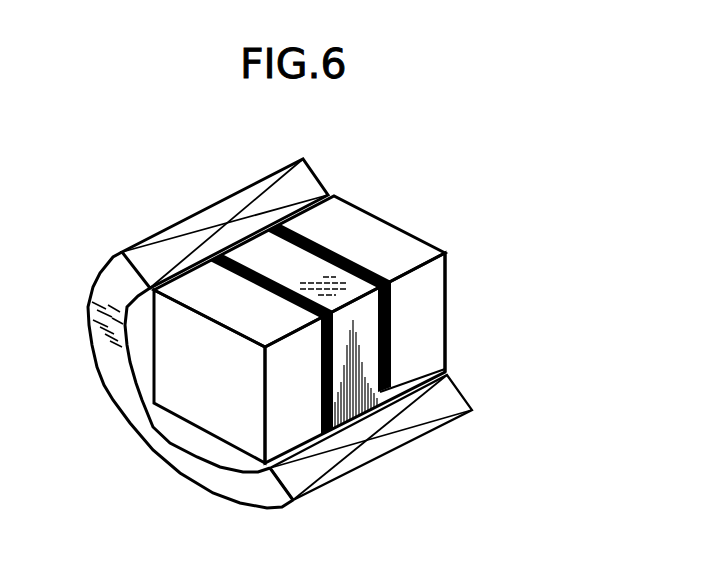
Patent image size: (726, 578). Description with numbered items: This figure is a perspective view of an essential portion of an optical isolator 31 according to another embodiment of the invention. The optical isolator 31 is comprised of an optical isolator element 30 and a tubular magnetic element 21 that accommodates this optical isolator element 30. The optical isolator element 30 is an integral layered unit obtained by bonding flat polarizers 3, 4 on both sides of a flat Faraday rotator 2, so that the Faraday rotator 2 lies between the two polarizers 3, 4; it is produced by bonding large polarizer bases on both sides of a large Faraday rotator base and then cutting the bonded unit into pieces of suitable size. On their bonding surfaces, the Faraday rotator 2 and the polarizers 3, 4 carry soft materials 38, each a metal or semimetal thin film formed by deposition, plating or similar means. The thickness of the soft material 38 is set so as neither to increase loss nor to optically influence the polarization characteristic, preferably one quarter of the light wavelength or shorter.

The optical isolator element 30 is at (323, 291).
The Faraday rotator 2 is at (370, 257).
The polarizer 3 is at (303, 273).
The polarizer 4 is at (438, 274).
The optical isolator 31 is at (458, 313).
The tubular magnetic element 21 is at (413, 447).
The soft material 38 is at (355, 412).